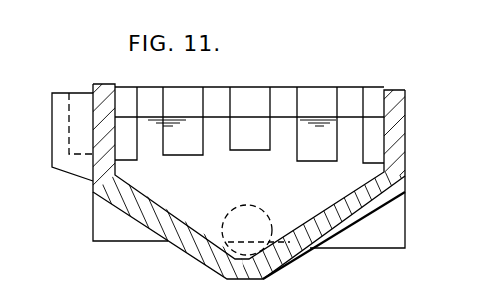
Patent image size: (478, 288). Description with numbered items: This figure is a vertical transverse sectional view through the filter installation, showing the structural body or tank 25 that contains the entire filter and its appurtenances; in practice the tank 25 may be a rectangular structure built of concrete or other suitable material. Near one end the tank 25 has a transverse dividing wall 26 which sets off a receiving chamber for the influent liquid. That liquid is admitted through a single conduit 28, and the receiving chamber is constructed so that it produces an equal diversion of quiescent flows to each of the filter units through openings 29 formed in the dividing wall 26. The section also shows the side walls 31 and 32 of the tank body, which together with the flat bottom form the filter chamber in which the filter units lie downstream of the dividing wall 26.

The tank 25 is at (239, 148).
The transverse dividing wall 26 is at (198, 196).
The conduit 28 is at (270, 228).
The openings 29 is at (253, 113).
The side wall 31 is at (107, 138).
The side wall 32 is at (399, 150).